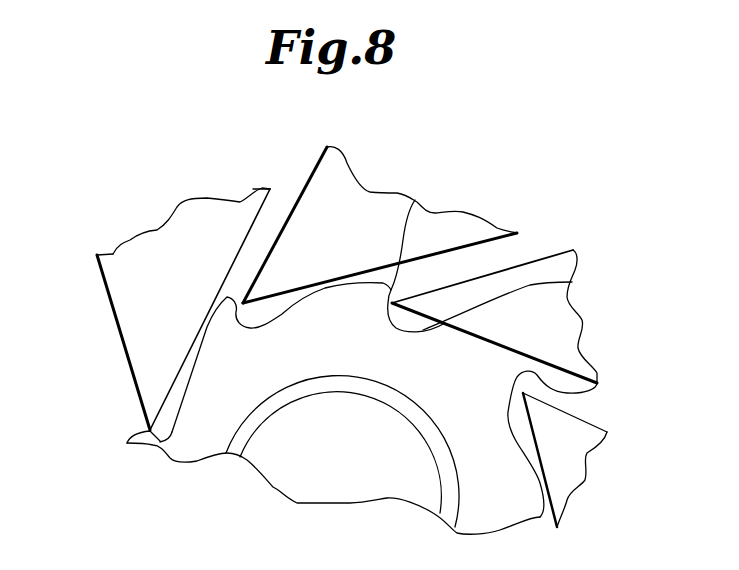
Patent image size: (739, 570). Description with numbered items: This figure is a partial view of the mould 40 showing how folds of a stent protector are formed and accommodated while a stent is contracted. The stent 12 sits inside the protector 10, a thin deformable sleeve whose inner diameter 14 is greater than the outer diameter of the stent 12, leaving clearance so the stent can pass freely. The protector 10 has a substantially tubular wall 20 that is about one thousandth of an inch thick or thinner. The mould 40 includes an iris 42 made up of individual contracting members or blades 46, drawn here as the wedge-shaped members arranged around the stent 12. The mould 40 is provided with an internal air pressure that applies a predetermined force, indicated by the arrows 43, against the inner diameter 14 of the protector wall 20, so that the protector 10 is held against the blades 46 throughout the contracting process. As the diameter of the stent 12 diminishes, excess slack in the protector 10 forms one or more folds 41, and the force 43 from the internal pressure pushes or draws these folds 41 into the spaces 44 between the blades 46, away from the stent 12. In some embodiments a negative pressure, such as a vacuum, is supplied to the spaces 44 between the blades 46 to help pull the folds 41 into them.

The stent protector 10 is at (571, 284).
The stent 12 is at (417, 433).
The inner diameter 14 is at (180, 425).
The tubular wall 20 is at (162, 440).
The mould 40 is at (486, 186).
The folds 41 is at (415, 200).
The iris 42 is at (257, 315).
The arrows 43 is at (206, 348).
The spaces 44 is at (470, 260).
The blades 46 is at (303, 207).